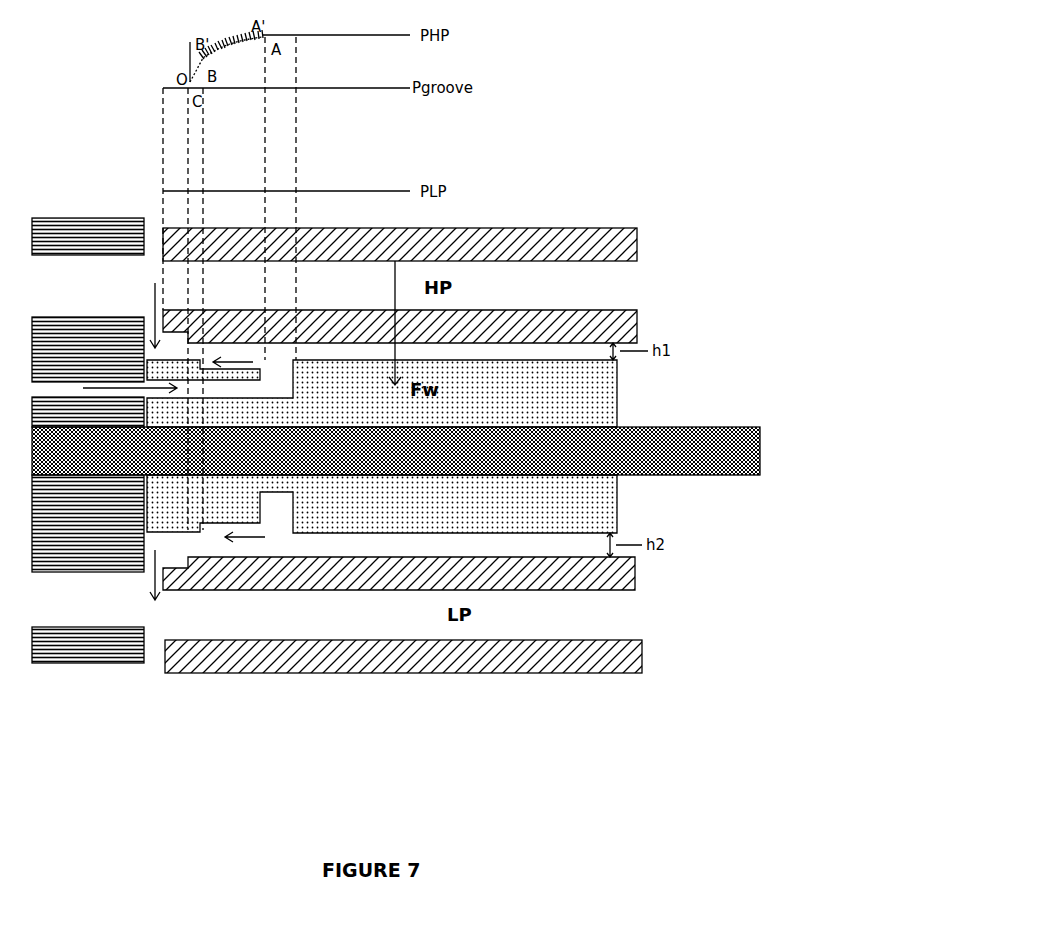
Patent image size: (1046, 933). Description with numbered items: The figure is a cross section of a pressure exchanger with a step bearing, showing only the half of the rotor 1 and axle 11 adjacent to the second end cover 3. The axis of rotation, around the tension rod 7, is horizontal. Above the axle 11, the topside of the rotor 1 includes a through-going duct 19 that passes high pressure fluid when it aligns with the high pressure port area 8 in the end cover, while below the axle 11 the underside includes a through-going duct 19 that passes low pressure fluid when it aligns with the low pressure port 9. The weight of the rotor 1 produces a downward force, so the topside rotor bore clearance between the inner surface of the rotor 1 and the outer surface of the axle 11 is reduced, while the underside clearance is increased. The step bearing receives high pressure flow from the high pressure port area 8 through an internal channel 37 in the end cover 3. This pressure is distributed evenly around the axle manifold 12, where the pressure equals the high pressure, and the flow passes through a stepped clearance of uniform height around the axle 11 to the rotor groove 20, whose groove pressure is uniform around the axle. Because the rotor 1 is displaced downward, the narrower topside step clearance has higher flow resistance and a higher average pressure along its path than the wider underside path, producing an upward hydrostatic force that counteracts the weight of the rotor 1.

The rotor 1 is at (493, 227).
The second end cover 3 is at (47, 558).
The tension rod 7 is at (680, 475).
The high pressure port area 8 is at (73, 290).
The low pressure port 9 is at (120, 608).
The axle 11 is at (590, 400).
The axle manifold 12 is at (277, 512).
The through-going duct 19 is at (562, 612).
The rotor groove 20 is at (173, 547).
The internal channel 37 is at (78, 387).